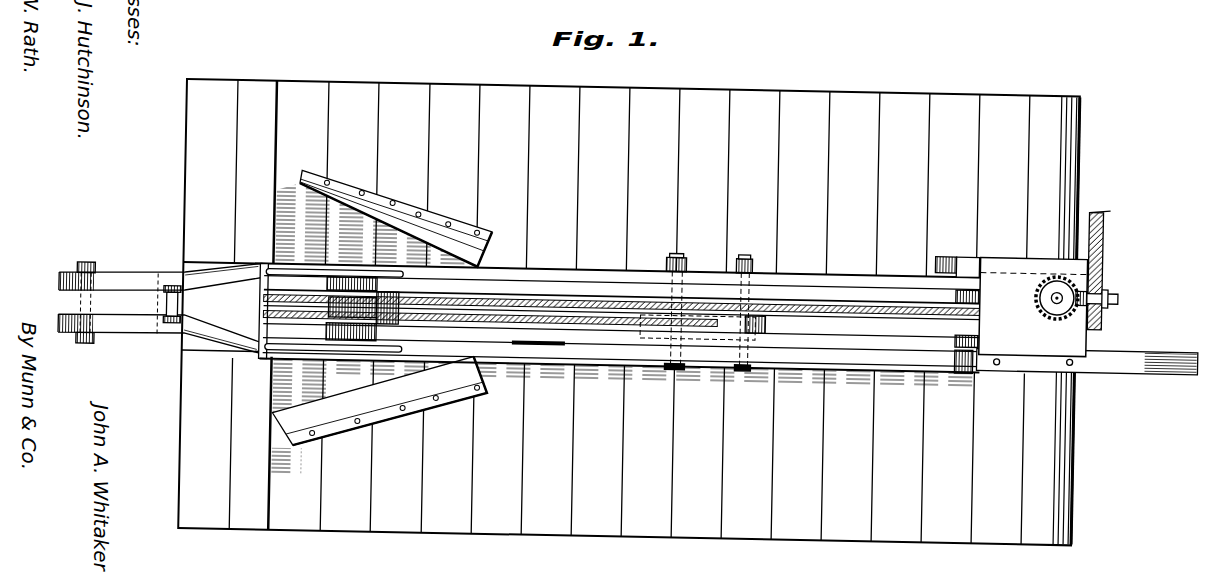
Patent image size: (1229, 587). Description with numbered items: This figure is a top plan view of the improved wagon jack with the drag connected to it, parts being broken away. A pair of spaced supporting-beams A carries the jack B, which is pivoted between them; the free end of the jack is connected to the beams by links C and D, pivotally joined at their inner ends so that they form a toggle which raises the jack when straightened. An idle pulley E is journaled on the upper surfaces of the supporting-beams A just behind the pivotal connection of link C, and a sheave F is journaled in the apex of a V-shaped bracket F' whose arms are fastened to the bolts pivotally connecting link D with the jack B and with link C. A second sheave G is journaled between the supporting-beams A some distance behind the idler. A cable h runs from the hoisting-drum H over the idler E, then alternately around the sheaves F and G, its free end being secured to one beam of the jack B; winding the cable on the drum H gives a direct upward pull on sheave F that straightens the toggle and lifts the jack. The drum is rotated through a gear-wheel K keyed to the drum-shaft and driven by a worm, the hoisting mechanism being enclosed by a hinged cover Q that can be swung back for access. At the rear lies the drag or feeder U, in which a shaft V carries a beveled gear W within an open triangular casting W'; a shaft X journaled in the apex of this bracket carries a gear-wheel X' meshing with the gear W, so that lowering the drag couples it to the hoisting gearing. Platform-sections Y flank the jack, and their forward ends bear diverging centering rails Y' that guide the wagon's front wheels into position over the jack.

The supporting-beams A is at (602, 270).
The jack B is at (838, 286).
The link C is at (142, 281).
The link D is at (105, 303).
The idle pulley E is at (406, 286).
The sheave F is at (253, 311).
The V-shaped bracket F' is at (334, 314).
The sheave G is at (711, 317).
The hoisting-drum H is at (987, 307).
The gear-wheel K is at (984, 279).
The cover Q is at (1033, 307).
The drag or feeder U is at (1108, 224).
The shaft V is at (1112, 280).
The beveled gear W is at (1070, 322).
The triangular-shaped casting W' is at (1122, 313).
The shaft X is at (1047, 292).
The gear-wheel X' is at (1043, 315).
The platform-sections Y is at (629, 312).
The centering rails Y' is at (383, 314).
The cable h is at (461, 320).